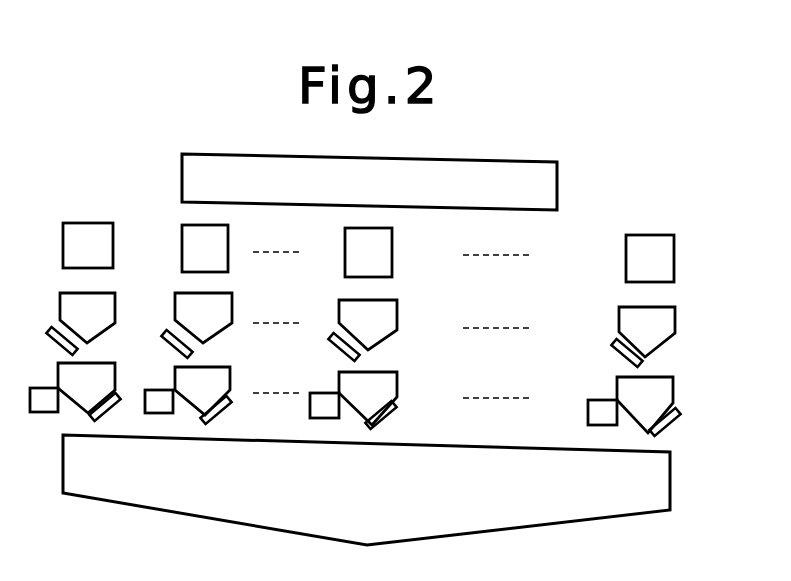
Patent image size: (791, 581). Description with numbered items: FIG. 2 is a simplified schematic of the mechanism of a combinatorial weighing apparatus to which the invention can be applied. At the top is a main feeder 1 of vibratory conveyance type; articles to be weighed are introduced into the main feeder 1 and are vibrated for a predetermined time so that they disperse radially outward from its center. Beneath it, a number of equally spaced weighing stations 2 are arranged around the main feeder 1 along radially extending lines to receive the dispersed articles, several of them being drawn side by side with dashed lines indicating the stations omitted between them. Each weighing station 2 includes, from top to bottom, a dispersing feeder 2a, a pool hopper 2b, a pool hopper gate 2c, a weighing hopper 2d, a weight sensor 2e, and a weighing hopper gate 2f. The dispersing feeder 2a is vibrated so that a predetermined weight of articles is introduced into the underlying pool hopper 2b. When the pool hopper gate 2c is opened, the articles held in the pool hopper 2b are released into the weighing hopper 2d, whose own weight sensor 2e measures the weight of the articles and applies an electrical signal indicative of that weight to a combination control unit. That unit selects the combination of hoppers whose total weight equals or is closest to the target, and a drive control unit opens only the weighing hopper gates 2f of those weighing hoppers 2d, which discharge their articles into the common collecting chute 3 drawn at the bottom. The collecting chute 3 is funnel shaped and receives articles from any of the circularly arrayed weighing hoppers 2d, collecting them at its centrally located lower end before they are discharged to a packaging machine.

The main feeder 1 is at (405, 165).
The weighing station 2 is at (45, 178).
The dispersing feeder 2a is at (85, 225).
The pool hopper 2b is at (60, 292).
The pool hopper gate 2c is at (50, 330).
The weighing hopper 2d is at (58, 378).
The weight sensor 2e is at (33, 412).
The weighing hopper gate 2f is at (93, 420).
The collecting chute 3 is at (507, 520).